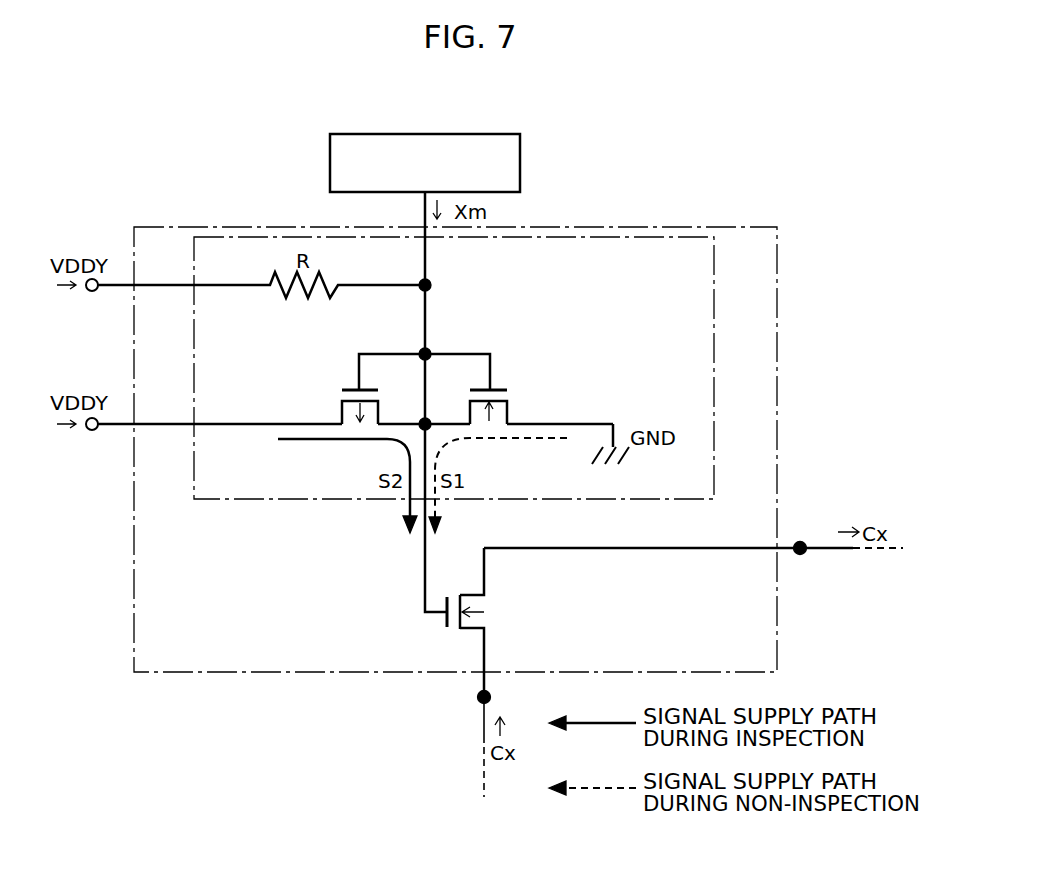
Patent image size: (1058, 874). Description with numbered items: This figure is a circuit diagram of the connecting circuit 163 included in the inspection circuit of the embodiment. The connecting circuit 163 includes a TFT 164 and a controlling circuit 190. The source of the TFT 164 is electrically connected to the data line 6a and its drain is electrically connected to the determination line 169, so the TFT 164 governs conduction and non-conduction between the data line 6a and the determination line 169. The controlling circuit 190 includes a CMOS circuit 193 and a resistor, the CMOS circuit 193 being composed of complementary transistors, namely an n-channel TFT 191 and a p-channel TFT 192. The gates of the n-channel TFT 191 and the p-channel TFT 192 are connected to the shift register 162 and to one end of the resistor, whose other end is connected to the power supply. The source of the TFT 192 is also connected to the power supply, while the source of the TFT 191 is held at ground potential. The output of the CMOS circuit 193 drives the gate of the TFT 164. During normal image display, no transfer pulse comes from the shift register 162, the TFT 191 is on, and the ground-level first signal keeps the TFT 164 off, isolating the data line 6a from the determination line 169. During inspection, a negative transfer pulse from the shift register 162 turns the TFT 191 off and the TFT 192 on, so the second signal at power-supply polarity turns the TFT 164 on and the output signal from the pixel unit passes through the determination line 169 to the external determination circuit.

The shift register 162 is at (520, 153).
The connecting circuit 163 is at (778, 251).
The controlling circuit 190 is at (714, 313).
The CMOS circuit 193 is at (446, 361).
The p-channel TFT 192 is at (342, 396).
The n-channel TFT 191 is at (507, 401).
The TFT 164 is at (461, 626).
The determination line 169 is at (823, 547).
The data line 6a is at (484, 722).